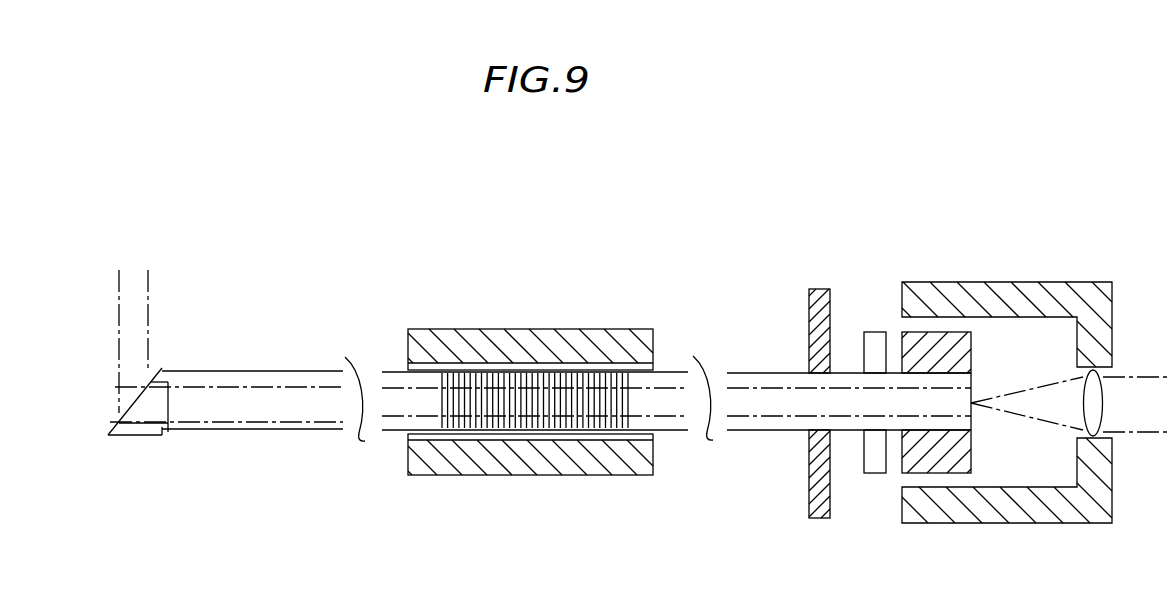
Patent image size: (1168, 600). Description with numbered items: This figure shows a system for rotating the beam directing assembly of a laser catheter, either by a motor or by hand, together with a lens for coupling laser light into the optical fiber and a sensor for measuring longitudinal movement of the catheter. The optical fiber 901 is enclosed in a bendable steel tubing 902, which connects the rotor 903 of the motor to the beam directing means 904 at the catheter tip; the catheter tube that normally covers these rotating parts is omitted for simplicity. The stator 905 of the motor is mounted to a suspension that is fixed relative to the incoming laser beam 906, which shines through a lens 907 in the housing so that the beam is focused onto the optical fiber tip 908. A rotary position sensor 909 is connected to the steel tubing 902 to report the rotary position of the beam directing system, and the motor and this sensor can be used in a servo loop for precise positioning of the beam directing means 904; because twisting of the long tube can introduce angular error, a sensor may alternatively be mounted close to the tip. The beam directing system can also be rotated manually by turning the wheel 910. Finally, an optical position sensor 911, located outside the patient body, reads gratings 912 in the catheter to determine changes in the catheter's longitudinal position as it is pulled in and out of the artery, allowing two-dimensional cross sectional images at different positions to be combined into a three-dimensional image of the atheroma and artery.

The optical fiber 901 is at (777, 391).
The bendable steel tubing 902 is at (770, 430).
The rotor 903 is at (972, 455).
The beam directing means 904 is at (119, 413).
The stator 905 is at (1022, 282).
The incoming laser beam 906 is at (1152, 363).
The lens 907 is at (1106, 405).
The optical fiber tip 908 is at (972, 395).
The rotary position sensor 909 is at (873, 332).
The wheel 910 is at (818, 289).
The optical position sensor 911 is at (506, 329).
The gratings 912 is at (536, 432).